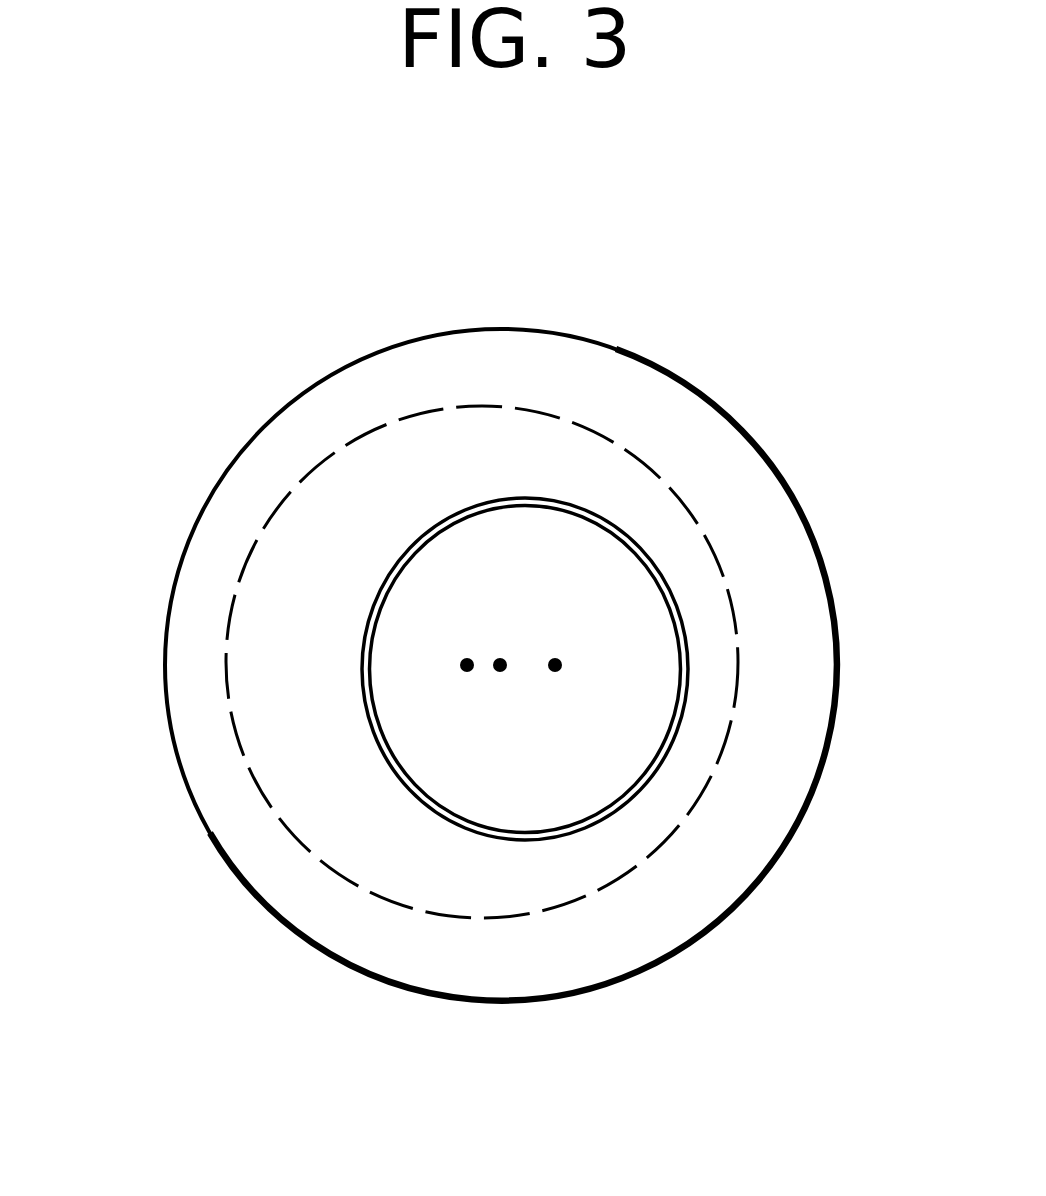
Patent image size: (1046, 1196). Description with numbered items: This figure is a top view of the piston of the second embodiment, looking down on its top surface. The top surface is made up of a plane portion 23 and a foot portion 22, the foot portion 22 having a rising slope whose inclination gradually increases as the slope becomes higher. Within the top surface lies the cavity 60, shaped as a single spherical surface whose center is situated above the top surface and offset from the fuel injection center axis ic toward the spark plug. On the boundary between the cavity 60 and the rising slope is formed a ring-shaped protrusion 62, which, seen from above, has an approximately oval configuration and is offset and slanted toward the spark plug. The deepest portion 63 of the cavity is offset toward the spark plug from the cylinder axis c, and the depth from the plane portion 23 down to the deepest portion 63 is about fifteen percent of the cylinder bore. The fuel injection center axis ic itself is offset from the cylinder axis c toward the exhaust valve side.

The foot portion 22 is at (287, 745).
The plane portion 23 is at (228, 513).
The cavity 60 is at (622, 623).
The ring-shaped protrusion 62 is at (680, 683).
The deepest portion 63 is at (555, 665).
The fuel injection center axis ic is at (467, 665).
The cylinder axis c is at (500, 665).